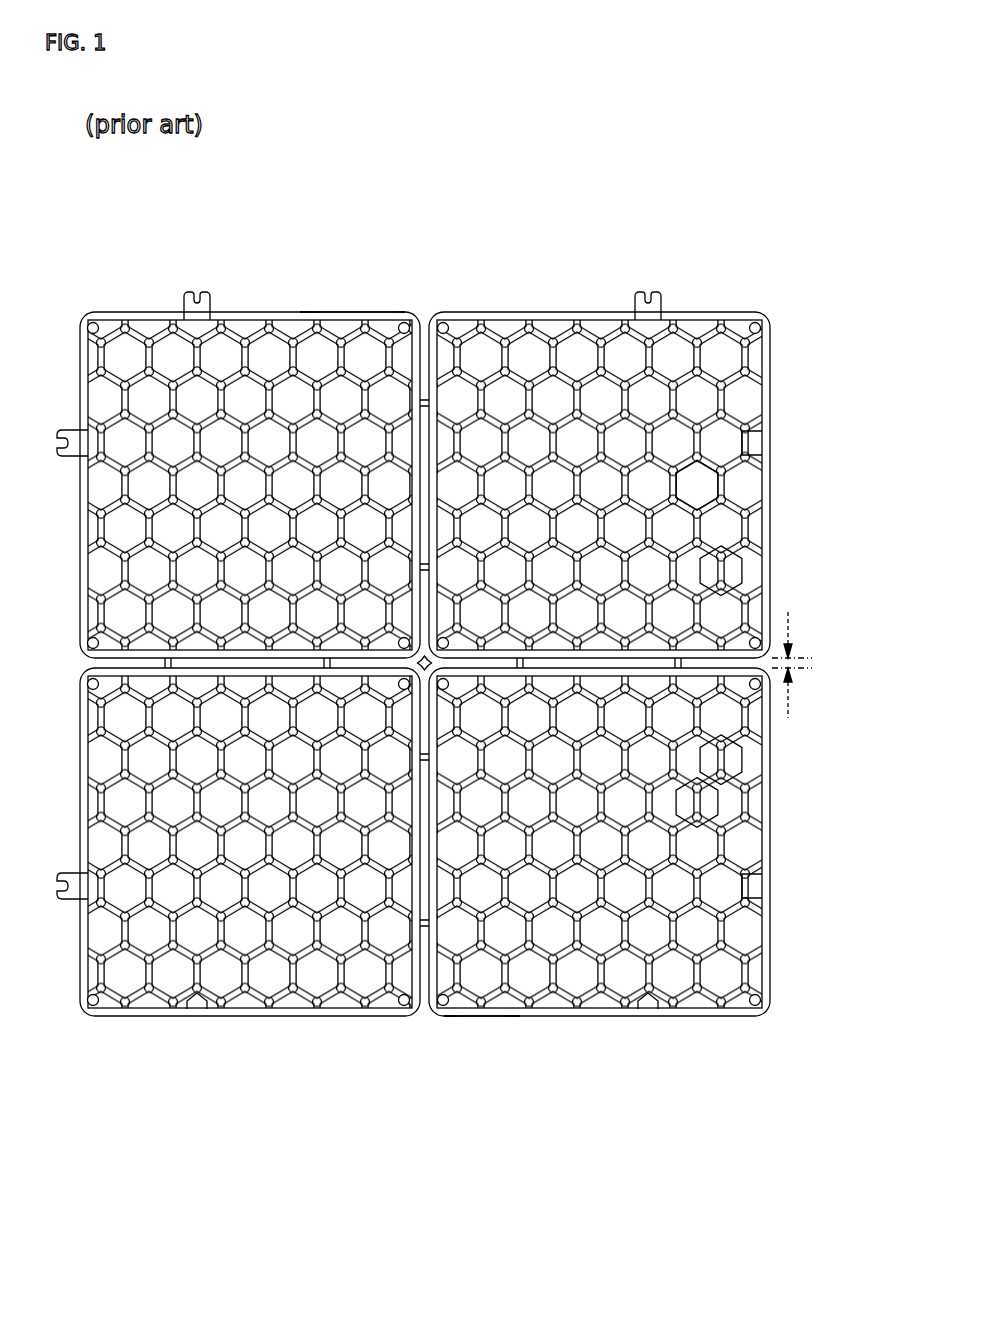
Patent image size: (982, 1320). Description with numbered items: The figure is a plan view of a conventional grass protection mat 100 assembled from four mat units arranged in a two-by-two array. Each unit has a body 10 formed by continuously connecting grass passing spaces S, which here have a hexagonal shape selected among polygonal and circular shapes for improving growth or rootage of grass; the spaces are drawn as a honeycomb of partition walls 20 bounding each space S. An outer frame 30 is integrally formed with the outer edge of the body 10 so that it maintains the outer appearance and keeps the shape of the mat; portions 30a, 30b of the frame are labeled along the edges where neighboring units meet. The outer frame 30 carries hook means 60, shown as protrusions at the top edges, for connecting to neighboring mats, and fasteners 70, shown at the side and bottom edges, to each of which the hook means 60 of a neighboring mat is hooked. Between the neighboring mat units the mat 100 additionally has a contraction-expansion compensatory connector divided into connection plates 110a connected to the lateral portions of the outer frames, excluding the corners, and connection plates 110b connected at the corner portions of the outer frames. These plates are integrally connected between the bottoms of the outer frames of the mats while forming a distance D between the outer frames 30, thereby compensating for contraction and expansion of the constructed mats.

The grass protection mat 100 is at (445, 648).
The body 10 is at (735, 912).
The partition wall 20 is at (724, 743).
The grass passing space S is at (704, 492).
The outer frame 30 is at (390, 664).
The first coupling portion 30a is at (308, 310).
The second coupling portion 30b is at (420, 664).
The hook means 60 is at (658, 290).
The fastener 70 is at (766, 441).
The connection plate 110a is at (424, 765).
The connection plate 110b is at (405, 661).
The distance D is at (802, 665).